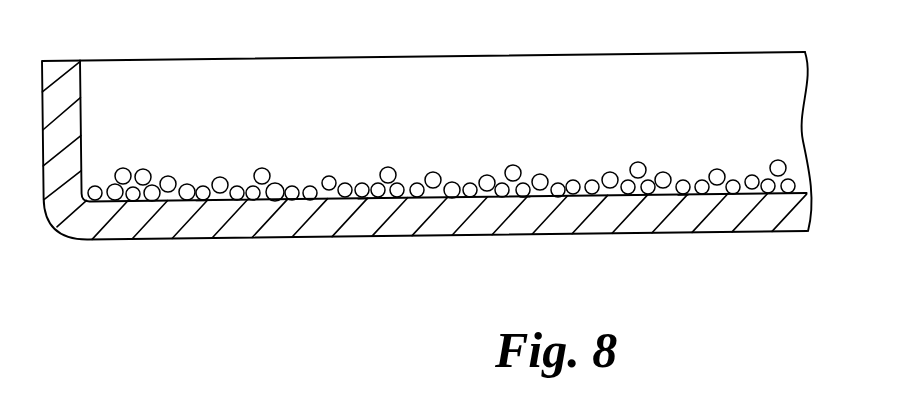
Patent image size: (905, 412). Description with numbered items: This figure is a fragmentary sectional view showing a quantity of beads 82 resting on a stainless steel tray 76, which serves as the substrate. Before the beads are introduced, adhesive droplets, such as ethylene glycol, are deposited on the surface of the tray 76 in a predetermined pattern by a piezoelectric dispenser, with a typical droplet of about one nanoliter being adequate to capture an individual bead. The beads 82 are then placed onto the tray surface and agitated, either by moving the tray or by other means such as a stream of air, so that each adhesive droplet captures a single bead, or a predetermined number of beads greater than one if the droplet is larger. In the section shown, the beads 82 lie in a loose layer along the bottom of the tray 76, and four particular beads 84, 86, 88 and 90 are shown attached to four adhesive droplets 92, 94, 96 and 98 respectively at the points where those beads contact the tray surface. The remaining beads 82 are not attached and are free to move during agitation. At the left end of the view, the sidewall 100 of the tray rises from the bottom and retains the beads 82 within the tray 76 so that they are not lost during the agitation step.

The tray 76 is at (434, 236).
The beads 82 is at (417, 159).
The bead 84 is at (203, 194).
The bead 86 is at (362, 194).
The bead 88 is at (526, 194).
The bead 90 is at (685, 191).
The droplet 92 is at (201, 201).
The droplet 94 is at (363, 199).
The droplet 96 is at (525, 198).
The droplet 98 is at (683, 194).
The sidewall 100 is at (80, 107).